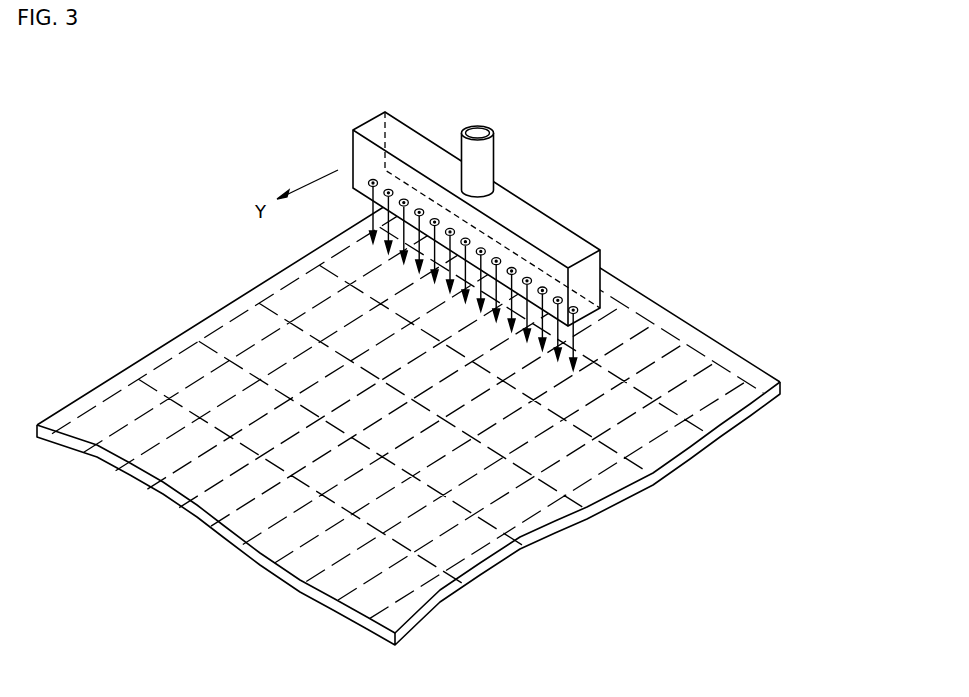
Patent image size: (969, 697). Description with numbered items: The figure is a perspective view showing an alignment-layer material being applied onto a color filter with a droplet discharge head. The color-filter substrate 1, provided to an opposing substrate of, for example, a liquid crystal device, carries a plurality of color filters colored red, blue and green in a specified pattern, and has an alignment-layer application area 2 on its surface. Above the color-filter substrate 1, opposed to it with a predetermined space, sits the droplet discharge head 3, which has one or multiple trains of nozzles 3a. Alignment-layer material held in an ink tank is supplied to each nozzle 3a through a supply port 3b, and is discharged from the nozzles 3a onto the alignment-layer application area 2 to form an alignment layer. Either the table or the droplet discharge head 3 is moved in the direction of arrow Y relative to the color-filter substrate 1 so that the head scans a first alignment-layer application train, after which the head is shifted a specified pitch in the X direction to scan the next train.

The color-filter substrate 1 is at (648, 477).
The alignment-layer application area 2 is at (643, 312).
The droplet discharge head 3 is at (552, 222).
The nozzles 3a is at (383, 186).
The supply port 3b is at (485, 153).